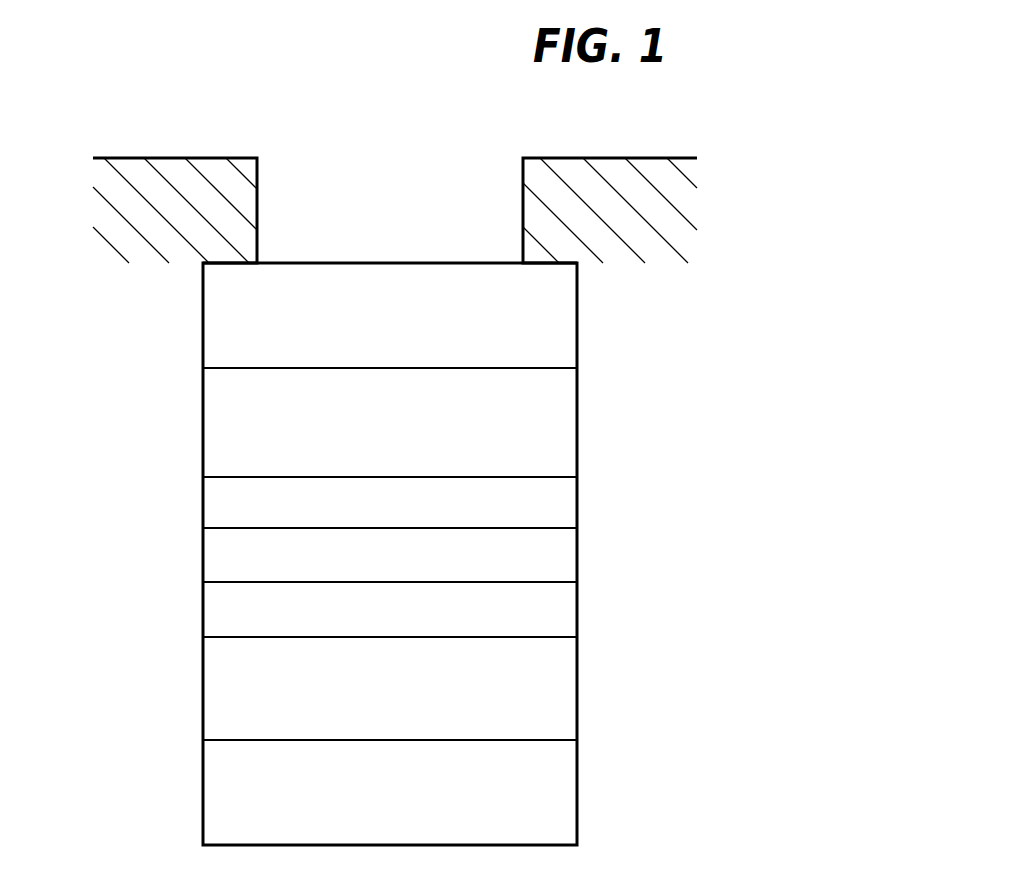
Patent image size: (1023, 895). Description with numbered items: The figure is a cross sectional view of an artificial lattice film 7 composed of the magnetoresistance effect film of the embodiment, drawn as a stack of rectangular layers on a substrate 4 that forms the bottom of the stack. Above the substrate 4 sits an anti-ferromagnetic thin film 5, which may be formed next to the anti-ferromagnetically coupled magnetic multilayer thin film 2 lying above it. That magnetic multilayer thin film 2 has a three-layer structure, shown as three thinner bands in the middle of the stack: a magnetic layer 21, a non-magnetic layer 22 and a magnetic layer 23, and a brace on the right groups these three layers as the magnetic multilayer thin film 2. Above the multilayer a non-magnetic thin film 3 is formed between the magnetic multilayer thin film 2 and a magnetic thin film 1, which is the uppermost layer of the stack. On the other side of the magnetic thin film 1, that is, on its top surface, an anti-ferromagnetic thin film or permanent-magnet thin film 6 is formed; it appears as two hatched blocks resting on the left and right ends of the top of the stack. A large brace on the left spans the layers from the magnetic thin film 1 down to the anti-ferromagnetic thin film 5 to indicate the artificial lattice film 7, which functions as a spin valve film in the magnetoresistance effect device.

The magnetic thin film 1 is at (557, 311).
The magnetic multilayer thin film 2 is at (805, 683).
The non-magnetic thin film 3 is at (553, 395).
The substrate 4 is at (557, 797).
The anti-ferromagnetic thin film 5 is at (553, 700).
The anti-ferromagnetic thin film or permanent-magnet thin film 6 is at (608, 170).
The artificial lattice film 7 is at (188, 737).
The magnetic layer 21 is at (557, 493).
The non-magnetic layer 22 is at (560, 545).
The magnetic layer 23 is at (560, 605).